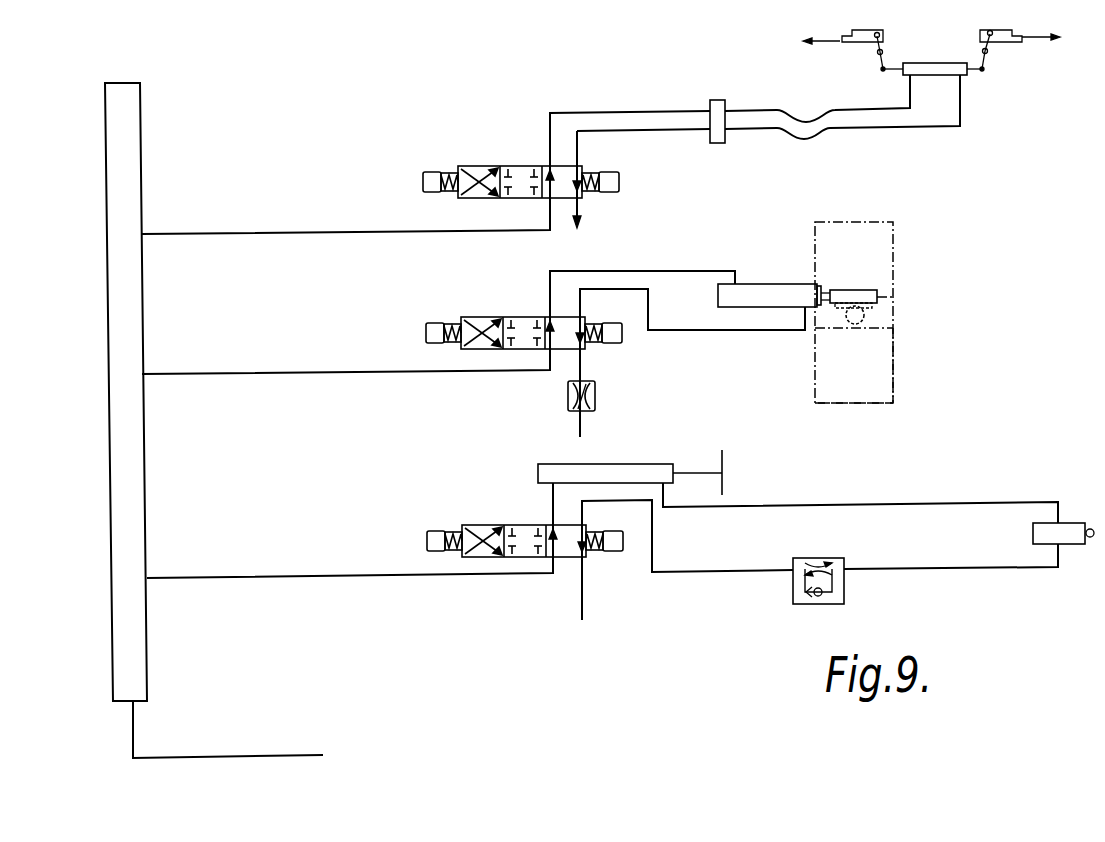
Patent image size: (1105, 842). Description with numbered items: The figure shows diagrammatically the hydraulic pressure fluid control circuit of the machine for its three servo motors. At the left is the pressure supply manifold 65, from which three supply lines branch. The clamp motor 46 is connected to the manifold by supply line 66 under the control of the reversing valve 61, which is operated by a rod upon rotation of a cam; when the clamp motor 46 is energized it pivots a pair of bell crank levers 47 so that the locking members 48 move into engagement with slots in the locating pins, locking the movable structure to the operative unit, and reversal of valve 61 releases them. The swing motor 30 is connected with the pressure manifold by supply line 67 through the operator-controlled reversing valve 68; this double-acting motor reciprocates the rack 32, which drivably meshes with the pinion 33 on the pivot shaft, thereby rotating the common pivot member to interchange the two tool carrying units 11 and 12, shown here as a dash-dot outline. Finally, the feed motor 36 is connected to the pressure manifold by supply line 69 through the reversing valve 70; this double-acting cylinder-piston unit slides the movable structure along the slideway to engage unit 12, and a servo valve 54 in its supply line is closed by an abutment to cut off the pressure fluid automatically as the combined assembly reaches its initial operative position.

The tool carrying unit 11 is at (884, 221).
The tool carrying unit 12 is at (890, 391).
The servo motor 30 is at (771, 284).
The rack 32 is at (862, 290).
The pinion 33 is at (866, 313).
The servo motor 36 is at (655, 464).
The servo motor 46 is at (930, 63).
The bell crank levers 47 is at (878, 64).
The locking members 48 is at (858, 45).
The servo valve 54 is at (1076, 545).
The reversing valve 61 is at (513, 164).
The pressure supply manifold 65 is at (134, 118).
The supply line 66 is at (323, 232).
The supply line 67 is at (325, 372).
The reversing valve 68 is at (524, 314).
The supply line 69 is at (353, 575).
The reversing valve 70 is at (522, 520).